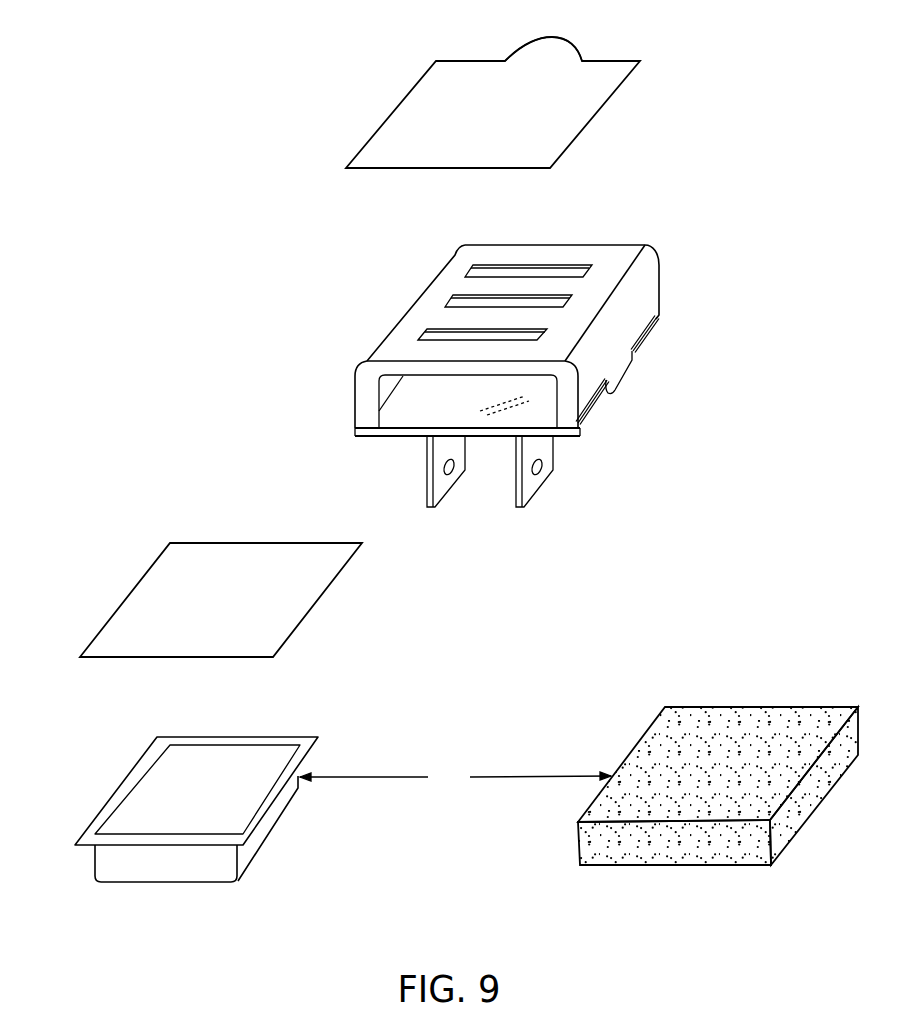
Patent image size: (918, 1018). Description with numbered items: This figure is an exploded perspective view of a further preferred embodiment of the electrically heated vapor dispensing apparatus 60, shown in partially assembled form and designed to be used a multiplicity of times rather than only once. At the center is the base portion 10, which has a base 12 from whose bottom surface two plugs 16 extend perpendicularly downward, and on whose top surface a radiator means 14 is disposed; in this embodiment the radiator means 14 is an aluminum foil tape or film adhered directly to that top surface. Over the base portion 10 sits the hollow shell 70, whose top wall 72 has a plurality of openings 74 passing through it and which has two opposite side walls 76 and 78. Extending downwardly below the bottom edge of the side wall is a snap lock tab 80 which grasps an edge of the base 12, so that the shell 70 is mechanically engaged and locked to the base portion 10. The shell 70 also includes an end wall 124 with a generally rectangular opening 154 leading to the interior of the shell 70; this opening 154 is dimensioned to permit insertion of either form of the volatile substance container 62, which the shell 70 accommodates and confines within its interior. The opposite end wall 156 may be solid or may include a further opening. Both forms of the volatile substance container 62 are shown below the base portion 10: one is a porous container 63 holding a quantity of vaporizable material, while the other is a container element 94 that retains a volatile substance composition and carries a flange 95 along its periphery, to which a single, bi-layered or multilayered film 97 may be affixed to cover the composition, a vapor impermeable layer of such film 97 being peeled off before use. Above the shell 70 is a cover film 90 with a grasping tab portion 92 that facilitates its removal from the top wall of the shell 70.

The base portion 10 is at (625, 470).
The base 12 is at (590, 434).
The radiator means 14 is at (402, 420).
The plugs 16 is at (442, 502).
The electrically heated vapor dispensing apparatus 60 is at (712, 165).
The volatile substance container 62 is at (455, 778).
The porous container 63 is at (613, 858).
The shell 70 is at (528, 332).
The top wall 72 is at (458, 257).
The openings 74 is at (463, 274).
The side wall 76 is at (656, 288).
The side wall 78 is at (365, 362).
The snap lock tab 80 is at (630, 374).
The cover film 90 is at (395, 110).
The grasping tab portion 92 is at (573, 38).
The container element 94 is at (92, 868).
The flange 95 is at (312, 745).
The film 97 is at (250, 553).
The end wall 124 is at (366, 402).
The opening 154 is at (503, 417).
The end wall 156 is at (614, 240).